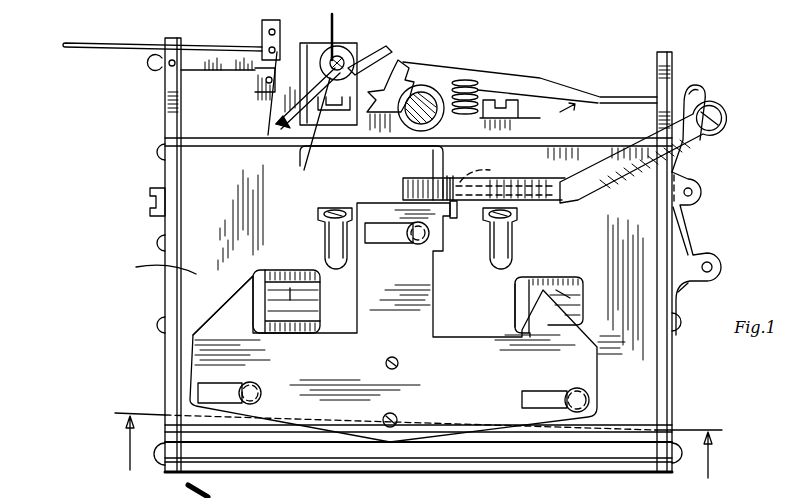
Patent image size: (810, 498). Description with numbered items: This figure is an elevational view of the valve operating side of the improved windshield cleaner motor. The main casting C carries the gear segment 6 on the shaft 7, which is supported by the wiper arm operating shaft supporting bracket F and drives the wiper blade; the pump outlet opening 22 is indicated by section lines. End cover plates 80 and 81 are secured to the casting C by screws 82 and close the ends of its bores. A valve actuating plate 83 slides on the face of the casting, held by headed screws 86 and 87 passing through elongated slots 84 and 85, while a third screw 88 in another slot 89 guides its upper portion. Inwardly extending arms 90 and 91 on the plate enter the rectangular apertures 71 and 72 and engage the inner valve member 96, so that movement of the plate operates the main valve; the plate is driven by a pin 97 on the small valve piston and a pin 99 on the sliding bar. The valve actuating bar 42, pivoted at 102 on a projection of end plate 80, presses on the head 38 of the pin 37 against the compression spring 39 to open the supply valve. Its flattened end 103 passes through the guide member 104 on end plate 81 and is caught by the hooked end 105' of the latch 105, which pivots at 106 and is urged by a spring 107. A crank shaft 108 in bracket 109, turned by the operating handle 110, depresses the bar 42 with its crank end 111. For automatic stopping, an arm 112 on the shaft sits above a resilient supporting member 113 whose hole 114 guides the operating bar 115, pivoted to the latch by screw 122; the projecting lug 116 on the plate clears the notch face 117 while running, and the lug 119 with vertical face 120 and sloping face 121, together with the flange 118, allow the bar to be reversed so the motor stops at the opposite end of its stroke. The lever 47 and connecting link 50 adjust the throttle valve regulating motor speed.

The connecting link 50 is at (95, 43).
The lever 47 is at (262, 34).
The crank shaft 108 is at (322, 60).
The bracket 109 is at (331, 48).
The operating handle 110 is at (336, 23).
The crank end 111 is at (390, 45).
The gear segment 6 is at (392, 80).
The shaft 7 is at (426, 105).
The head 38 is at (460, 84).
The compression spring 39 is at (480, 96).
The pin 37 is at (462, 112).
The guide member 104 is at (664, 63).
The hooked end 105' is at (723, 72).
The flattened end 103 is at (706, 92).
The screw 122 is at (723, 110).
The latch 105 is at (712, 231).
The pivot 106 is at (702, 191).
The projecting flange 118 is at (702, 262).
The spring 107 is at (690, 287).
The pivot 102 is at (163, 65).
The end cover plate 80 is at (165, 100).
The valve actuating bar 42 is at (231, 72).
The arm 112 is at (262, 100).
The resilient supporting member 113 is at (392, 162).
The hole 114 is at (446, 178).
The sloping face 121 is at (478, 168).
The lug 119 is at (484, 172).
The vertical face 120 is at (480, 186).
The notch face 117 is at (526, 187).
The projecting lug 116 is at (458, 218).
The operating bar 115 is at (597, 187).
The third screw 88 is at (424, 242).
The slot 89 is at (386, 244).
The rectangular aperture 71 is at (300, 270).
The rectangular aperture 72 is at (535, 278).
The inwardly extending arm 91 is at (569, 276).
The inner valve member 96 is at (566, 294).
The inwardly extending arm 90 is at (258, 290).
The valve actuating plate 83 is at (455, 335).
The main casting C is at (156, 267).
The wiper arm operating shaft supporting bracket F is at (562, 116).
The screws 82 is at (142, 332).
The elongated slot 84 is at (222, 408).
The headed screw 86 is at (256, 392).
The pin 97 is at (399, 363).
The pin 99 is at (398, 417).
The elongated slot 85 is at (535, 396).
The headed screw 87 is at (578, 390).
The end cover plate 81 is at (668, 374).
The pump outlet opening 22 is at (416, 445).